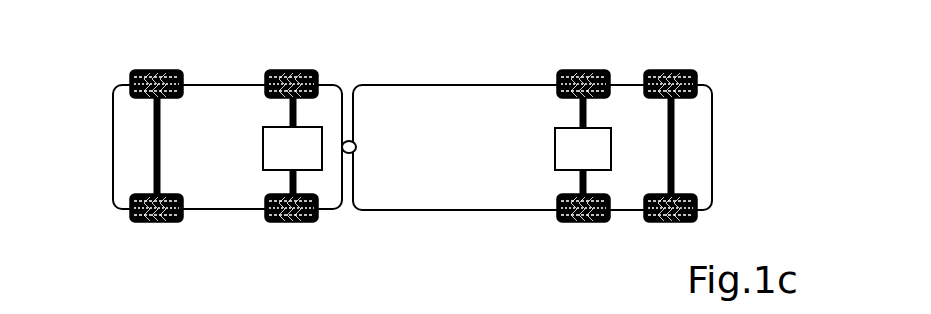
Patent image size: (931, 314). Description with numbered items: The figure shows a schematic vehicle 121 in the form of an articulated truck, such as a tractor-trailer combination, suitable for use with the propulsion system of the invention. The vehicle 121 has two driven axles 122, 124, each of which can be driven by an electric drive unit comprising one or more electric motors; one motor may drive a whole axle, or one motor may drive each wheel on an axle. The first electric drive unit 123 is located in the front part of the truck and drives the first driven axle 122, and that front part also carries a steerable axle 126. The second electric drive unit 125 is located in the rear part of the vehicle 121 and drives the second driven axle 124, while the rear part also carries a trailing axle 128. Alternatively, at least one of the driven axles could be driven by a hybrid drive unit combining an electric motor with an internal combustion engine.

The vehicle 121 is at (452, 63).
The driven axle 122 is at (283, 180).
The first electric drive unit 123 is at (263, 145).
The driven axle 124 is at (575, 180).
The second electric drive unit 125 is at (554, 145).
The steerable axle 126 is at (152, 157).
The trailing axle 128 is at (667, 143).